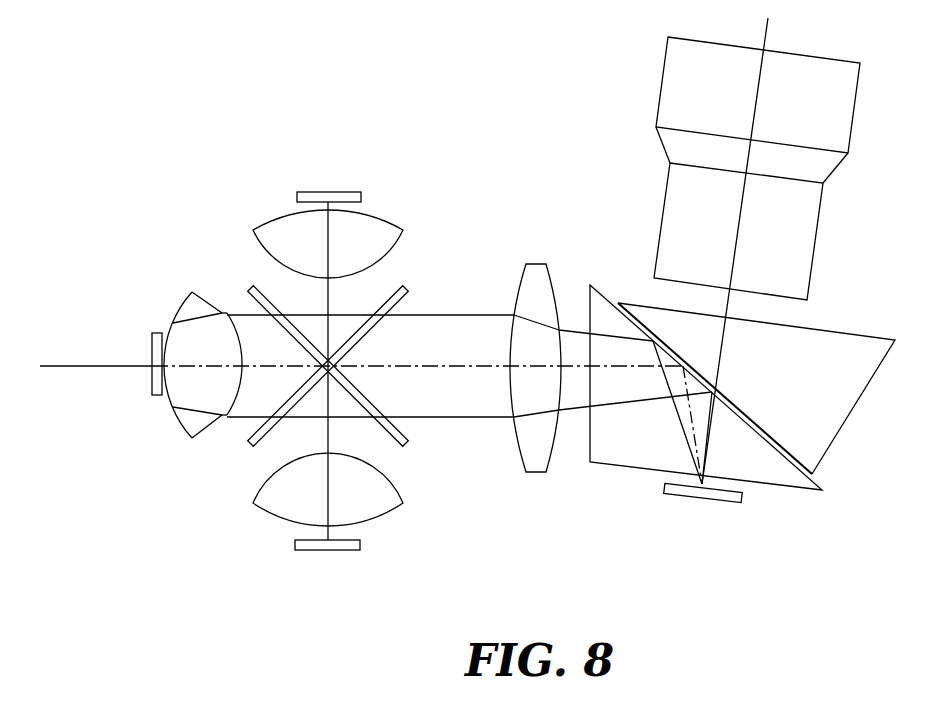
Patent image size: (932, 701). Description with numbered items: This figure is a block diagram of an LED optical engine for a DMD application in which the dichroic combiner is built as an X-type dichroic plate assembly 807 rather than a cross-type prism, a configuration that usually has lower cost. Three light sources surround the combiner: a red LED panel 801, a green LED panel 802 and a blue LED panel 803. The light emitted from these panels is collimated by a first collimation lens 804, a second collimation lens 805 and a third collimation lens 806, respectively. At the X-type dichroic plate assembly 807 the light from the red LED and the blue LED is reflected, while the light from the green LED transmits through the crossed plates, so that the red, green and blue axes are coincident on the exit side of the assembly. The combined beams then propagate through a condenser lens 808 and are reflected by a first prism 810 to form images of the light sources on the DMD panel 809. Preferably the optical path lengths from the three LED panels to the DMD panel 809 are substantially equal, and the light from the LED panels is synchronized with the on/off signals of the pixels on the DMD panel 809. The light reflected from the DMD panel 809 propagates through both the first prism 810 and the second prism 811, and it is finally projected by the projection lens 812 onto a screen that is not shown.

The red LED panel 801 is at (303, 192).
The green LED panel 802 is at (158, 333).
The blue LED panel 803 is at (302, 550).
The first collimation lens 804 is at (381, 228).
The second collimation lens 805 is at (199, 302).
The third collimation lens 806 is at (380, 488).
The X-type dichroic plate assembly 807 is at (405, 294).
The condenser lens 808 is at (529, 263).
The DMD panel 809 is at (717, 501).
The first prism 810 is at (600, 449).
The second prism 811 is at (847, 338).
The projection lens 812 is at (672, 100).